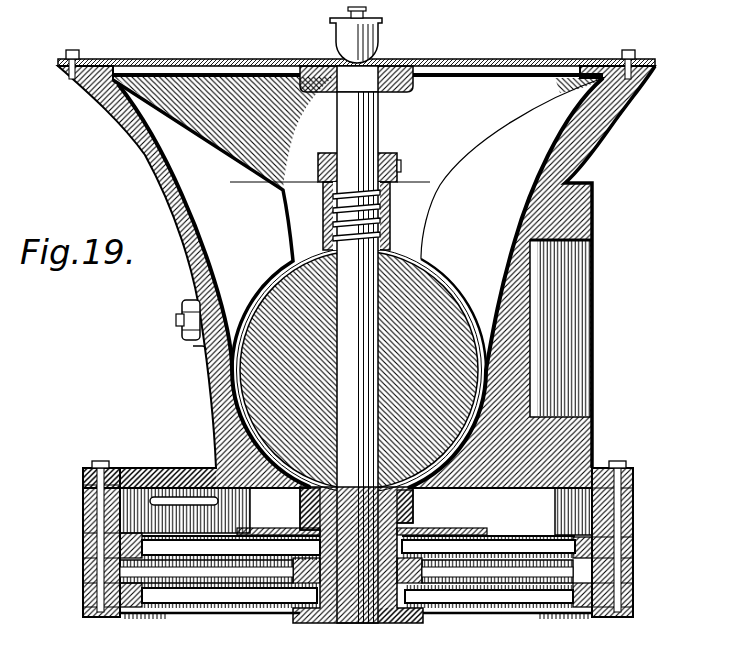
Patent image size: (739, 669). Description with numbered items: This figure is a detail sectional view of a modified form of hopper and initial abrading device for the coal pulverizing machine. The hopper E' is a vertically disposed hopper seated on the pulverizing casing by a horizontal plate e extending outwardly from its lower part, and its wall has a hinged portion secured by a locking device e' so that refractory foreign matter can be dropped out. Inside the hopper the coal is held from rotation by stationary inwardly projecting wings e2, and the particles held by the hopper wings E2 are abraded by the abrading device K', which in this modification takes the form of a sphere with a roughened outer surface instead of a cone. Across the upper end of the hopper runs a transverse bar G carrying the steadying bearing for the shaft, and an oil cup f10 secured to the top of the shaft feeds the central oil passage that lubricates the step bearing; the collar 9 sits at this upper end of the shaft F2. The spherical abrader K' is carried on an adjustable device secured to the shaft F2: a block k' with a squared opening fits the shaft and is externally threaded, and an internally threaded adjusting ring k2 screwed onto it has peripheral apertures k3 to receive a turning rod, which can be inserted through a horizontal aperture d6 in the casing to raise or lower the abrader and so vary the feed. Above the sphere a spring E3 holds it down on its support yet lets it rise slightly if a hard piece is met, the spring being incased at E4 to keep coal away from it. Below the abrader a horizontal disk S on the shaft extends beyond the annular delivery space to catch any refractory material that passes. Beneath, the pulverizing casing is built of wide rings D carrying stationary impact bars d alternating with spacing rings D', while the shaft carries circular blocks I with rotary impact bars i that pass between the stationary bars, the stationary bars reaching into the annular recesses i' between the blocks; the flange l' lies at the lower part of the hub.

The oil cup f10 is at (330, 34).
The hub collar 9 is at (390, 64).
The transverse bar G is at (522, 64).
The shaft F2 is at (380, 128).
The hopper wings E2 is at (147, 158).
The stationary inwardly projecting wings e2 is at (358, 223).
The spring E3 is at (318, 187).
The spring casing E4 is at (318, 200).
The hopper E' is at (416, 224).
The locking device e' is at (175, 321).
The spherical abrader K' is at (311, 370).
The horizontal plate e is at (185, 453).
The horizontal aperture d6 is at (183, 500).
The wide rings D is at (360, 540).
The spacing rings D' is at (626, 527).
The apertures k3 is at (303, 500).
The adjusting ring k2 is at (410, 521).
The block k' is at (442, 517).
The horizontal disk S is at (483, 533).
The stationary impact bars d is at (187, 566).
The radial impact bars i is at (231, 591).
The annular recesses i' is at (357, 620).
The circular blocks I is at (325, 612).
The flange l' is at (408, 631).